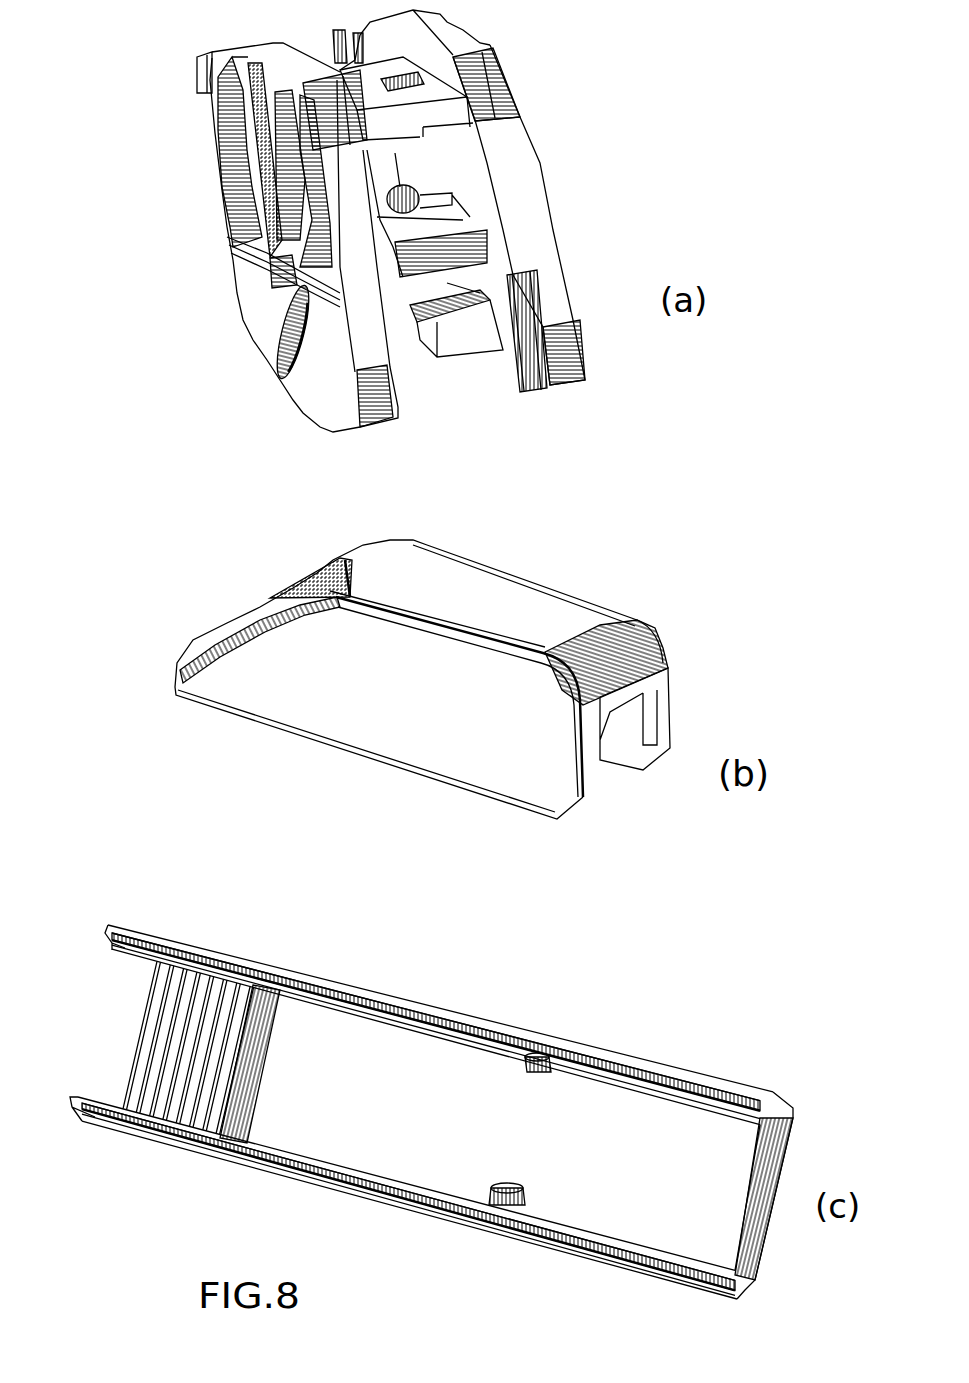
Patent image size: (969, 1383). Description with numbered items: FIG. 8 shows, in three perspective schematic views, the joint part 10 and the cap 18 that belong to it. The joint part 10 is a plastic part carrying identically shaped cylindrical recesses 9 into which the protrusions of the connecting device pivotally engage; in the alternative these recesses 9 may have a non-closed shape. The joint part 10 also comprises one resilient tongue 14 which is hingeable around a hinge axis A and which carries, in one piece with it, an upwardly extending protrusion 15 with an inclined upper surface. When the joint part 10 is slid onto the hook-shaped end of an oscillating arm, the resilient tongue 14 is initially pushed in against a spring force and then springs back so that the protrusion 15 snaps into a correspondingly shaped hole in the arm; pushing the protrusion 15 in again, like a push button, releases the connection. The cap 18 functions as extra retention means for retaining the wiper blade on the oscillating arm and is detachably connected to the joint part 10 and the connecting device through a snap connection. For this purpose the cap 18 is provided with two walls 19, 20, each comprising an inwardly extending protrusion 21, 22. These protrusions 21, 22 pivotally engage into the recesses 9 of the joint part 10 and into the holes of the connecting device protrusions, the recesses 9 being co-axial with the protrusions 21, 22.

The cylindrical recess 9 is at (297, 350).
The joint part 10 is at (530, 202).
The resilient tongue 14 is at (447, 283).
The upwardly extending protrusion 15 is at (418, 187).
The hinge axis A is at (327, 320).
The cap 18 is at (517, 592).
The wall 19 is at (512, 778).
The wall 20 is at (660, 687).
The inwardly extending protrusion 21 is at (548, 1077).
The inwardly extending protrusion 22 is at (520, 1188).